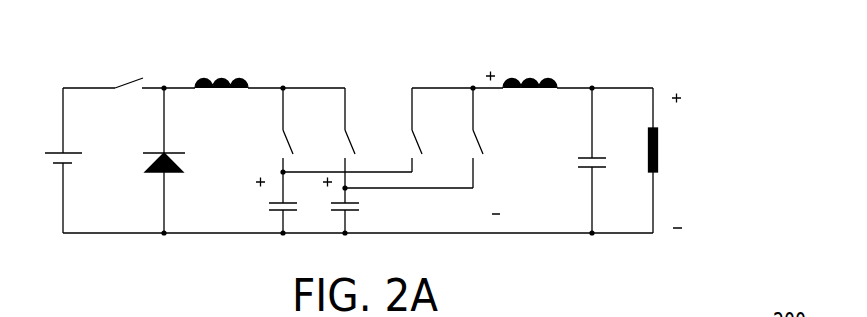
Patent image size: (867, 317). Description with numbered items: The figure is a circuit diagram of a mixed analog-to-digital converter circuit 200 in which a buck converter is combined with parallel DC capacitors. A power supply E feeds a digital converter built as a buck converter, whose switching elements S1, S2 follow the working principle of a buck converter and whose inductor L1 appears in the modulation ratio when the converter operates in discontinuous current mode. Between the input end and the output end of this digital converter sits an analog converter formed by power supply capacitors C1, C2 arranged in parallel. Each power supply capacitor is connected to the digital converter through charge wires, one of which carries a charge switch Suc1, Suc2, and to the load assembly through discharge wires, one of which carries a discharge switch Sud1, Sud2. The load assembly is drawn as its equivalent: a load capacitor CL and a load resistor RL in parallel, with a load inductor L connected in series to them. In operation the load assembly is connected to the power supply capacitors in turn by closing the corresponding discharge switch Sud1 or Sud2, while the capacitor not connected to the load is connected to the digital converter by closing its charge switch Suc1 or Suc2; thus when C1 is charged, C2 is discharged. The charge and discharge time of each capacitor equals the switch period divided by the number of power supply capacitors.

The mixed analog-to-digital converter circuit 200 is at (420, 127).
The power supply E is at (59, 143).
The switch of the buck converter S1 is at (117, 72).
The switch of the buck converter S2 is at (146, 160).
The inductor of the buck converter L1 is at (221, 69).
The charge switch Suc1 is at (265, 130).
The charge switch Suc2 is at (330, 138).
The discharge switch Sud1 is at (352, 130).
The discharge switch Sud2 is at (414, 138).
The power supply capacitor C1 is at (259, 202).
The power supply capacitor C2 is at (360, 206).
The load inductor L is at (521, 131).
The load capacitor CL is at (580, 160).
The load resistor RL is at (664, 160).